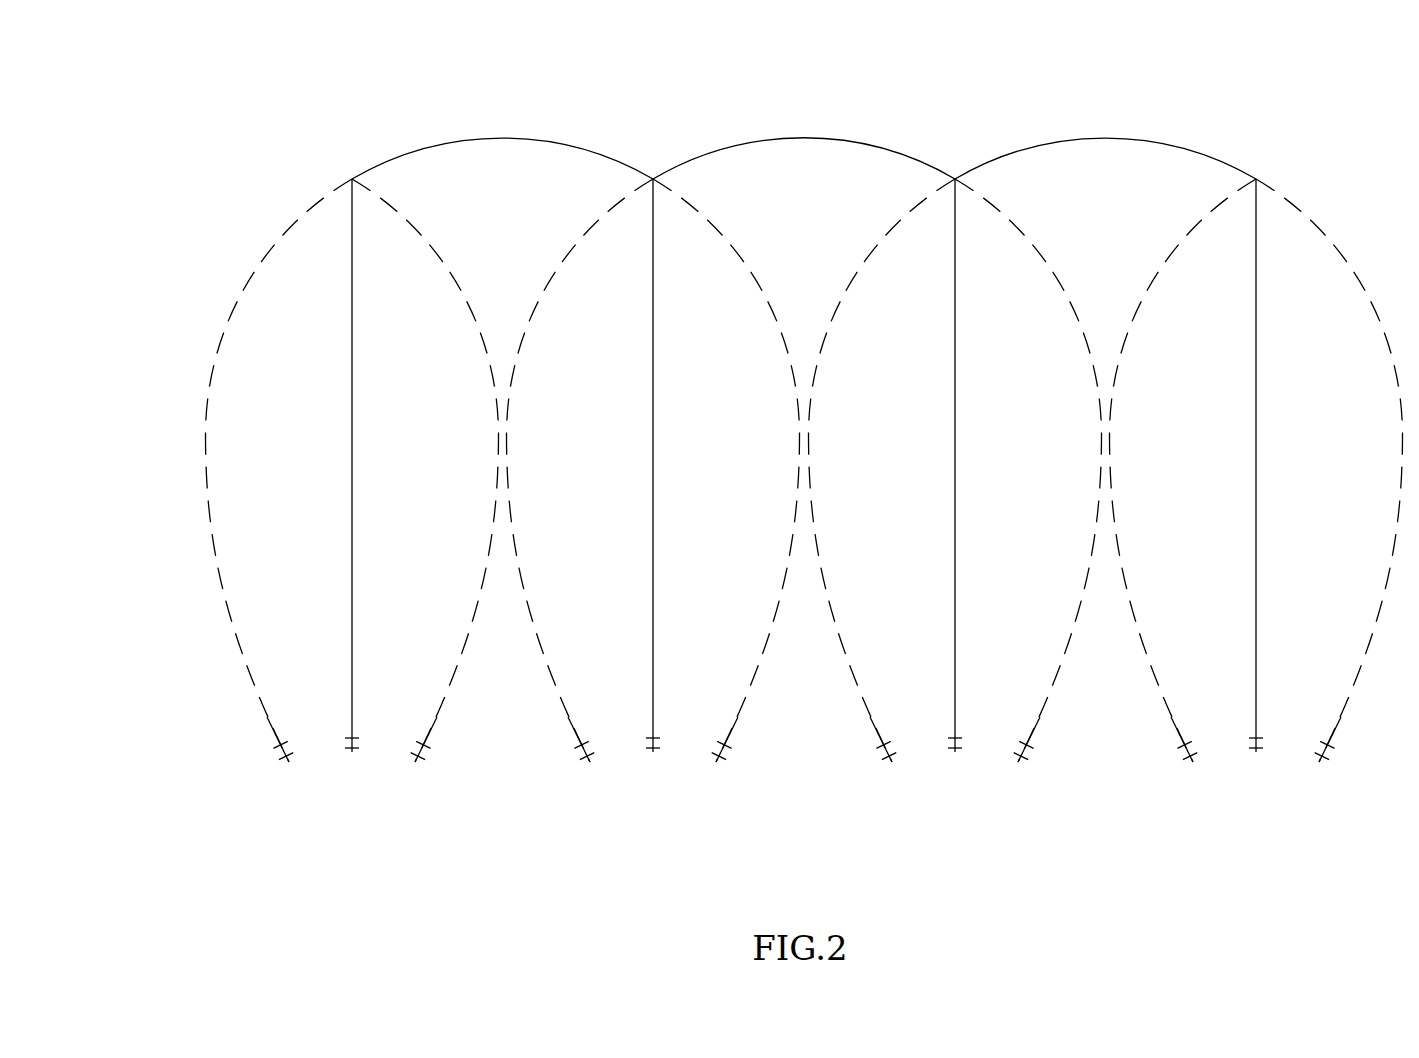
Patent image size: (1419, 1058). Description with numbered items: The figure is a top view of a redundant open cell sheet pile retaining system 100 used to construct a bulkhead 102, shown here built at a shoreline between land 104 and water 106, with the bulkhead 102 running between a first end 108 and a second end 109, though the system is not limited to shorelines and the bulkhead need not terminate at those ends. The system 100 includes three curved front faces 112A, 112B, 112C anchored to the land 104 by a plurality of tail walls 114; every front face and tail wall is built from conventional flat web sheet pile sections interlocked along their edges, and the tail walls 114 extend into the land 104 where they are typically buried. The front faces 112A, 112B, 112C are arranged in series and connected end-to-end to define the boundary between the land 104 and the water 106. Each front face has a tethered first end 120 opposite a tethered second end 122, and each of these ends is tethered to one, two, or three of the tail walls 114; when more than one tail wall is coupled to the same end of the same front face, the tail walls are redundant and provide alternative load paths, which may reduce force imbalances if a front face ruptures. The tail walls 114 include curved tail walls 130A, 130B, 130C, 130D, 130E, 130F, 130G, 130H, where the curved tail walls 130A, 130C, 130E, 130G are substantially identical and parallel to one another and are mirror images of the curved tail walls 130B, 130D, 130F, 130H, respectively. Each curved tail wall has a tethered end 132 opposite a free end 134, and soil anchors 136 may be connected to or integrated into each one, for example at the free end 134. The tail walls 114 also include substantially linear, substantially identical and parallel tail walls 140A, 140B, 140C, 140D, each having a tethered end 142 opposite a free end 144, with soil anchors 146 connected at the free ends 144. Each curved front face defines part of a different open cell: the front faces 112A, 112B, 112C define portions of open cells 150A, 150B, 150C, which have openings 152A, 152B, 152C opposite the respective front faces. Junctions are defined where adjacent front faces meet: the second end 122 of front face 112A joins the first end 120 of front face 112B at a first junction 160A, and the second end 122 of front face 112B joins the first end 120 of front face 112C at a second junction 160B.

The open cell sheet pile retaining system 100 is at (228, 148).
The bulkhead 102 is at (430, 147).
The land 104 is at (658, 895).
The water 106 is at (748, 64).
The first end 108 is at (350, 178).
The second end 109 is at (1258, 177).
The curved front face 112A is at (505, 133).
The curved front face 112B is at (803, 140).
The curved front face 112C is at (1105, 135).
The tail walls 114 is at (184, 362).
The tethered first end 120 is at (358, 174).
The tethered second end 122 is at (642, 170).
The curved tail wall 130A is at (216, 548).
The curved tail wall 130B is at (488, 548).
The curved tail wall 130C is at (517, 548).
The curved tail wall 130D is at (789, 548).
The curved tail wall 130E is at (819, 548).
The curved tail wall 130F is at (1091, 548).
The curved tail wall 130G is at (1120, 548).
The curved tail wall 130H is at (1392, 548).
The tethered end 132 is at (335, 184).
The free end 134 is at (272, 738).
The soil anchors 136 is at (290, 763).
The tail wall 140A is at (354, 417).
The tail wall 140B is at (655, 417).
The tail wall 140C is at (957, 417).
The tail wall 140D is at (1258, 417).
The tethered end 142 is at (337, 186).
The free end 144 is at (353, 728).
The soil anchors 146 is at (350, 757).
The open cell 150A is at (479, 250).
The open cell 150B is at (781, 252).
The open cell 150C is at (1091, 250).
The opening 152A is at (507, 720).
The opening 152B is at (808, 720).
The opening 152C is at (1110, 720).
The first junction 160A is at (657, 172).
The second junction 160B is at (958, 172).